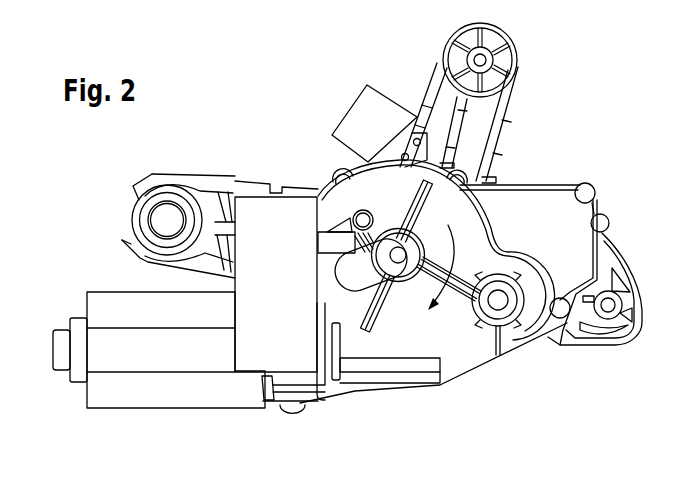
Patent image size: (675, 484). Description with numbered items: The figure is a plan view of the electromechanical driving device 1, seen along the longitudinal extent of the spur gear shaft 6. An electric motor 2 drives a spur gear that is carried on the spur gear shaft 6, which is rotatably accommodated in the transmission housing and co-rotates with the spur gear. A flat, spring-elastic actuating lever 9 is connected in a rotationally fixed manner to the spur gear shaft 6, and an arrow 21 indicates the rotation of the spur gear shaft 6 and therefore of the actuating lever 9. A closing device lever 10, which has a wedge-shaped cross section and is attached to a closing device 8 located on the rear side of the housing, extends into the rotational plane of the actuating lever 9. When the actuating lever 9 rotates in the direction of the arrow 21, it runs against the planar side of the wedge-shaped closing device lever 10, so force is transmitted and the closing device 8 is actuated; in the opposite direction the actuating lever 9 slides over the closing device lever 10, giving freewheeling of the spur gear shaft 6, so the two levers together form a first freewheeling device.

The electromechanical driving device 1 is at (109, 218).
The electric motor 2 is at (103, 397).
The spur gear shaft 6 is at (398, 265).
The closing device 8 is at (250, 222).
The actuating lever 9 is at (358, 275).
The closing device lever 10 is at (332, 242).
The arrow 21 is at (460, 243).